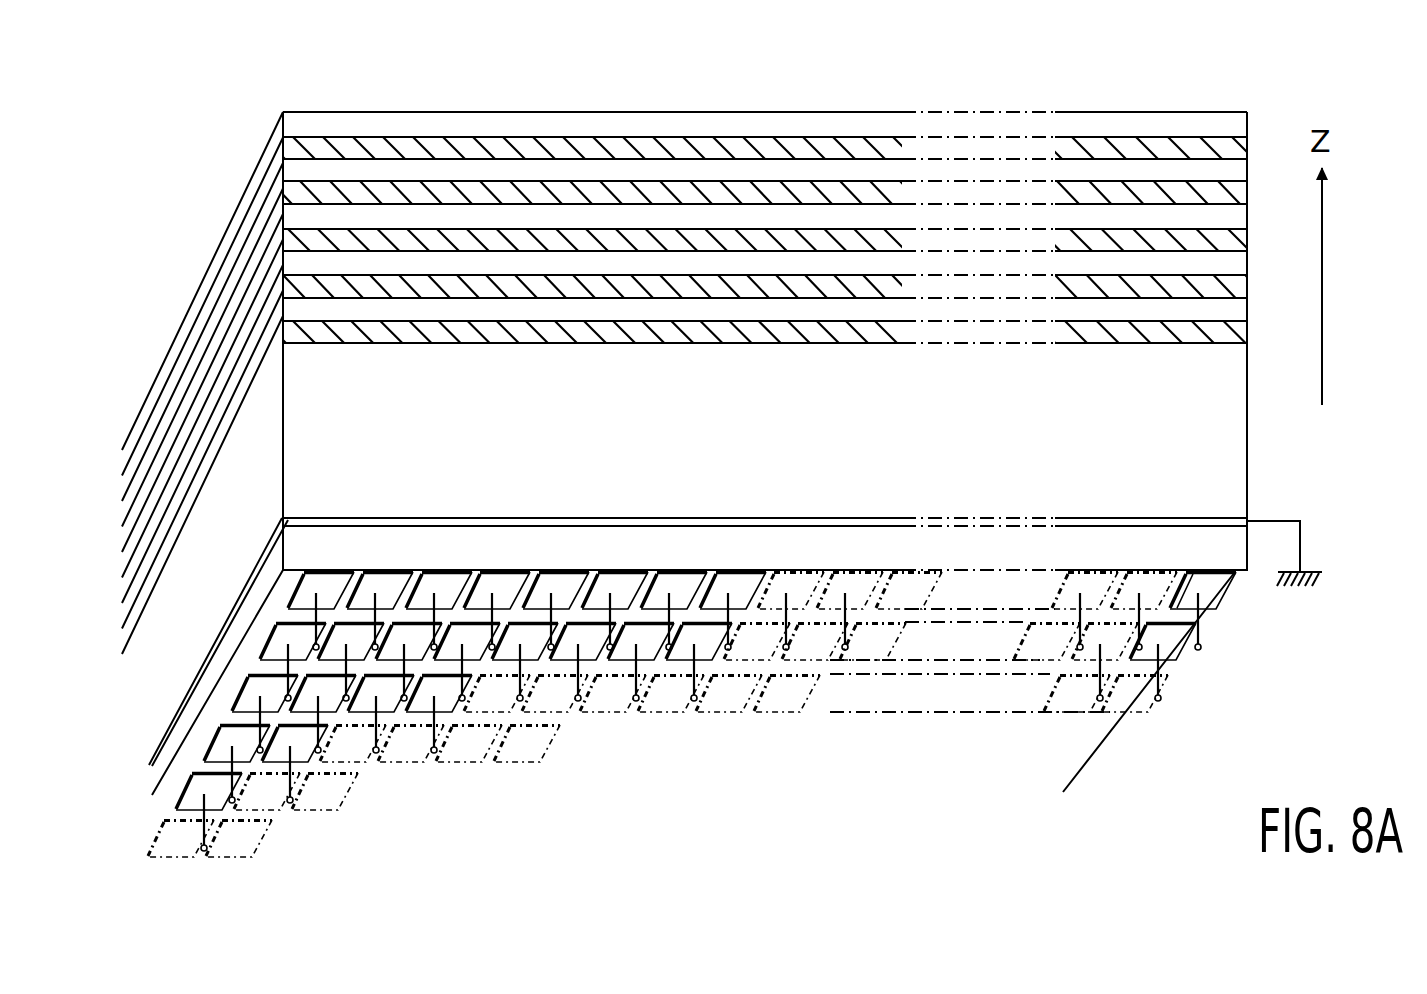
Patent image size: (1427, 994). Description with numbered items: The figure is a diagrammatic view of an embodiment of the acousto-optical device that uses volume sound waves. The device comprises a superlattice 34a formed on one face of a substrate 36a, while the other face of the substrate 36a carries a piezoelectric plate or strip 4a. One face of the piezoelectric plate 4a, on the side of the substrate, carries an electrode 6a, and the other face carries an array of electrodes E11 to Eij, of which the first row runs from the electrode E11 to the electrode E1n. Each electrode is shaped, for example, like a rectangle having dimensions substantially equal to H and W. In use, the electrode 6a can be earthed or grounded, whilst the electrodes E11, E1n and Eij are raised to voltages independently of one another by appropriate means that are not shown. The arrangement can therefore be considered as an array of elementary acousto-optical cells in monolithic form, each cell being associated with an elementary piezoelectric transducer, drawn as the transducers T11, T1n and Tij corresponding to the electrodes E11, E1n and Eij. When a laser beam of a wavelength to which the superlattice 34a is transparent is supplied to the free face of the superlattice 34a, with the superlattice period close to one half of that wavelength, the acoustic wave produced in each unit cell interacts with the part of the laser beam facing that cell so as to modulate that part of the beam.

The superlattice 34a is at (316, 106).
The substrate 36a is at (1218, 410).
The electrode 6a is at (448, 527).
The piezoelectric plate or strip 4a is at (755, 546).
The electrode E11 is at (306, 586).
The elementary piezoelectric transducer T11 is at (274, 598).
The electrode E1n is at (1210, 588).
The elementary piezoelectric transducer T1n is at (1220, 620).
The electrode Eij is at (667, 657).
The elementary piezoelectric transducer Tij is at (708, 670).